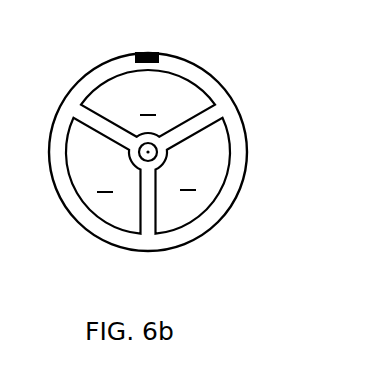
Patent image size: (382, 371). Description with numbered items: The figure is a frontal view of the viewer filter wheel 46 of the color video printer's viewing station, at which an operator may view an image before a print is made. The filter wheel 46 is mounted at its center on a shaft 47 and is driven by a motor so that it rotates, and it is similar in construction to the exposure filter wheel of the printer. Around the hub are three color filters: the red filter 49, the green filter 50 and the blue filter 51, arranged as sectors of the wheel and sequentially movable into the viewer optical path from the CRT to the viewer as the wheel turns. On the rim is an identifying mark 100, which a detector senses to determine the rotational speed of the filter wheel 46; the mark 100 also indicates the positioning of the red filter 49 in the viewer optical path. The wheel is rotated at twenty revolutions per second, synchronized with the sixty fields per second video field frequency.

The viewer filter wheel 46 is at (156, 252).
The shaft 47 is at (157, 152).
The red filter 49 is at (216, 159).
The green filter 50 is at (105, 212).
The blue filter 51 is at (183, 90).
The identifying mark 100 is at (137, 52).